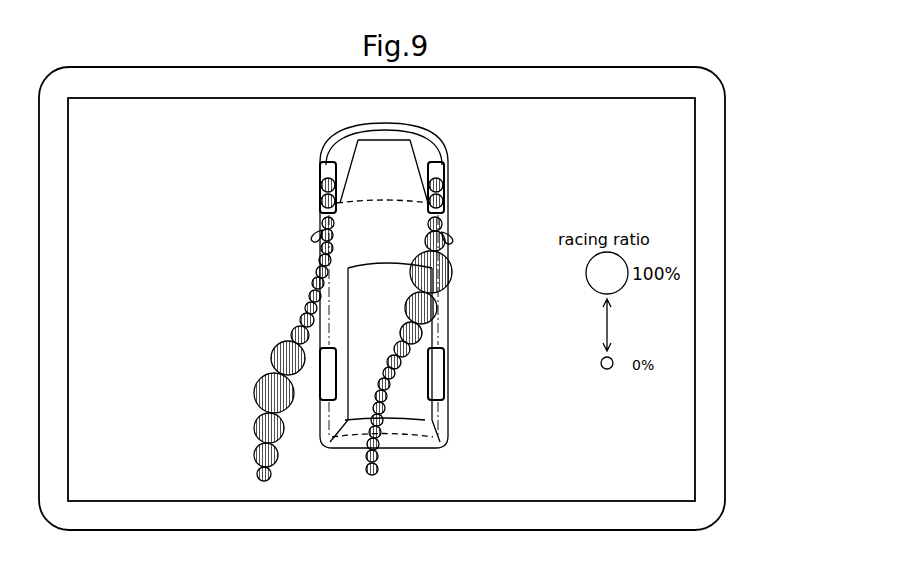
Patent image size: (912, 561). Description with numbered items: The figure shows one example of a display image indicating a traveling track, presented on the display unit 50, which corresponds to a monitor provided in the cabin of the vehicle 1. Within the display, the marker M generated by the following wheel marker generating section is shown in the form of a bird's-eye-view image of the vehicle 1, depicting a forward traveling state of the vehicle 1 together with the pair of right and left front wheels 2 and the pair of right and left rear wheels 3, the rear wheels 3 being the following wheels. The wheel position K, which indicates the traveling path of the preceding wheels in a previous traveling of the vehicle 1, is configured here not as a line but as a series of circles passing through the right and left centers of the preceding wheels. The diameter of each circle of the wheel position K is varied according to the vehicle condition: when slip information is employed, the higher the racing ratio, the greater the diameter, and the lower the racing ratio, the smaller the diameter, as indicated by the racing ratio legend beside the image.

The display unit 50 is at (725, 178).
The vehicle 1 is at (322, 150).
The front wheels 2 is at (320, 173).
The rear wheels 3 is at (318, 372).
The wheel position K is at (268, 384).
The marker M is at (387, 285).